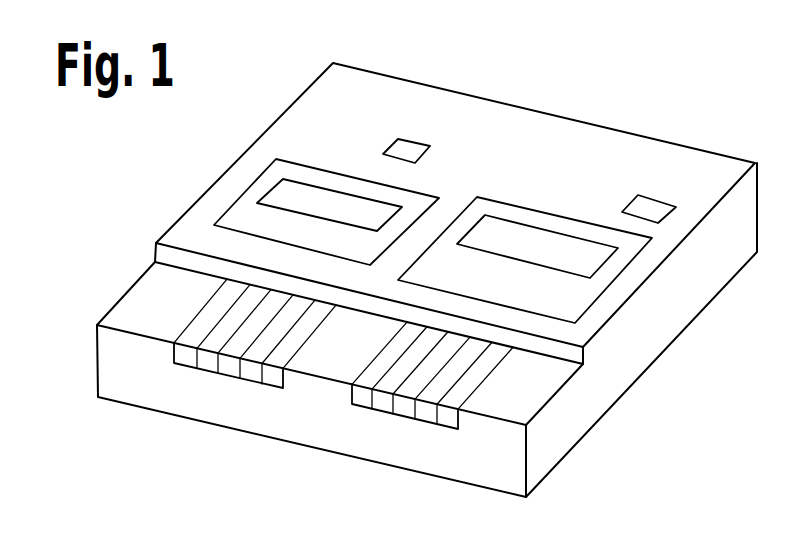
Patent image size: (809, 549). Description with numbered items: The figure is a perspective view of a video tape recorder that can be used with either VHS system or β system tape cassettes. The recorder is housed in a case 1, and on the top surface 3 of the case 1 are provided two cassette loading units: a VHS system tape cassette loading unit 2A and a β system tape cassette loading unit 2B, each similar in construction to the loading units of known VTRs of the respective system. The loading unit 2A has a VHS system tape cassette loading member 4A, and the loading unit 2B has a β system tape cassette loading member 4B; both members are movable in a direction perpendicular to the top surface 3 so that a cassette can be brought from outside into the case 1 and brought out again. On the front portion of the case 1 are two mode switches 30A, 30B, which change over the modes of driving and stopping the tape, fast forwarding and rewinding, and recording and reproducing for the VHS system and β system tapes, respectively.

The case 1 is at (685, 316).
The top surface 3 is at (562, 138).
The VHS system tape cassette loading unit 2A is at (537, 242).
The β system tape cassette loading unit 2B is at (342, 196).
The VHS system tape cassette loading member 4A is at (575, 228).
The β system tape cassette loading member 4B is at (415, 202).
The mode switch 30A is at (448, 415).
The mode switch 30B is at (274, 375).